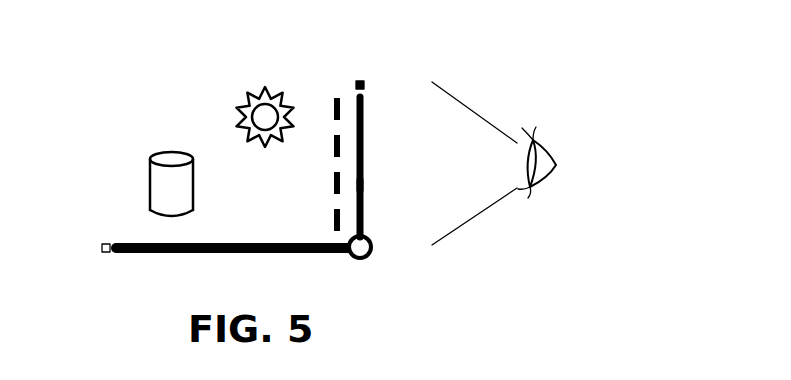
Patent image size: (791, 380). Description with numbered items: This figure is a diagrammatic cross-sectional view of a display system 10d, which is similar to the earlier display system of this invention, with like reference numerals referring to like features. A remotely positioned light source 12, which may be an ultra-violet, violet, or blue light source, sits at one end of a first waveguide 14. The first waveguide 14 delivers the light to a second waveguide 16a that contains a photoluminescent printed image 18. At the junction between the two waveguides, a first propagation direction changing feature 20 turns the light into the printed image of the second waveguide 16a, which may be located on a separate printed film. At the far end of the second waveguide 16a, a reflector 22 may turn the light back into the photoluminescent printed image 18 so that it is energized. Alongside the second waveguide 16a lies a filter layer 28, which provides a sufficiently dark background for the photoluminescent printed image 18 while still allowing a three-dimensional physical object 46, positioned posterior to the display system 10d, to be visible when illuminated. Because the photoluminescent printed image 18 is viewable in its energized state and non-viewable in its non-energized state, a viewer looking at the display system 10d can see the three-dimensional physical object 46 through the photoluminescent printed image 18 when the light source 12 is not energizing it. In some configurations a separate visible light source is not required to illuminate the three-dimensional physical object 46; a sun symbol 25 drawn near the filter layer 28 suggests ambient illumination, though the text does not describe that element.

The display system 10d is at (415, 62).
The light source 12 is at (100, 247).
The first waveguide 14 is at (226, 254).
The second waveguide 16a is at (364, 184).
The photoluminescent printed image 18 is at (364, 151).
The first propagation direction changing feature 20 is at (373, 247).
The reflector 22 is at (365, 85).
The ambient light 25 is at (266, 86).
The filter layer 28 is at (336, 97).
The three-dimensional physical object 46 is at (173, 151).